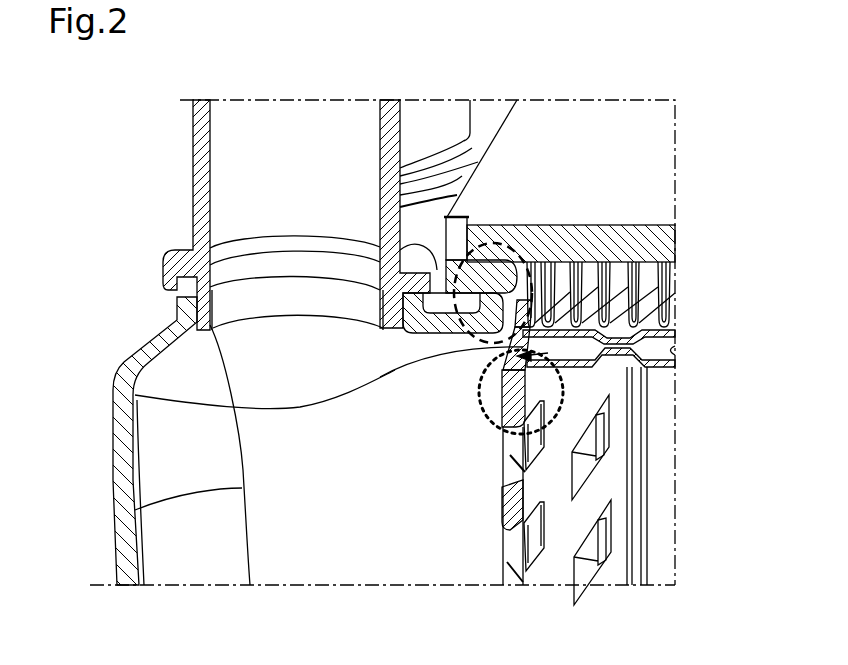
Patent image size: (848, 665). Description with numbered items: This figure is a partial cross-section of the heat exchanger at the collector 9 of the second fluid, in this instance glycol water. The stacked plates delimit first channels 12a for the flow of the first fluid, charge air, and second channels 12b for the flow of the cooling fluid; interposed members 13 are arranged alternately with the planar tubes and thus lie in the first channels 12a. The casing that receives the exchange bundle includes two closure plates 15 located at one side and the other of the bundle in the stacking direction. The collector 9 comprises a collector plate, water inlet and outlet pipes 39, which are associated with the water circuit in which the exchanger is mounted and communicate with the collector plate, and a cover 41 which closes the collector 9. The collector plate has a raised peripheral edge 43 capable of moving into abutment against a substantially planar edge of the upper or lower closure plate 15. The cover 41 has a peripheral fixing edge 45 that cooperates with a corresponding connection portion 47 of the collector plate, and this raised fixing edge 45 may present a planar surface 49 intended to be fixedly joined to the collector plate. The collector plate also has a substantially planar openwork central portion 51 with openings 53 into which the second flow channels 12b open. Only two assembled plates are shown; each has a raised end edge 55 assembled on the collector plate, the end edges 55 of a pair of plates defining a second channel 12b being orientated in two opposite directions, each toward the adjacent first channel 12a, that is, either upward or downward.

The collector 9 is at (295, 182).
The first channels 12a is at (690, 297).
The second channels 12b is at (492, 362).
The interposed members 13 is at (665, 277).
The closure plates 15 is at (635, 120).
The water inlet and outlet pipes 39 is at (260, 125).
The cover 41 is at (125, 424).
The raised peripheral edge 43 is at (483, 257).
The peripheral fixing edge 45 is at (483, 294).
The connection portion 47 is at (525, 307).
The planar surface 49 is at (510, 302).
The openwork central portion 51 is at (575, 413).
The openings 53 is at (582, 458).
The raised end edge 55 is at (553, 368).